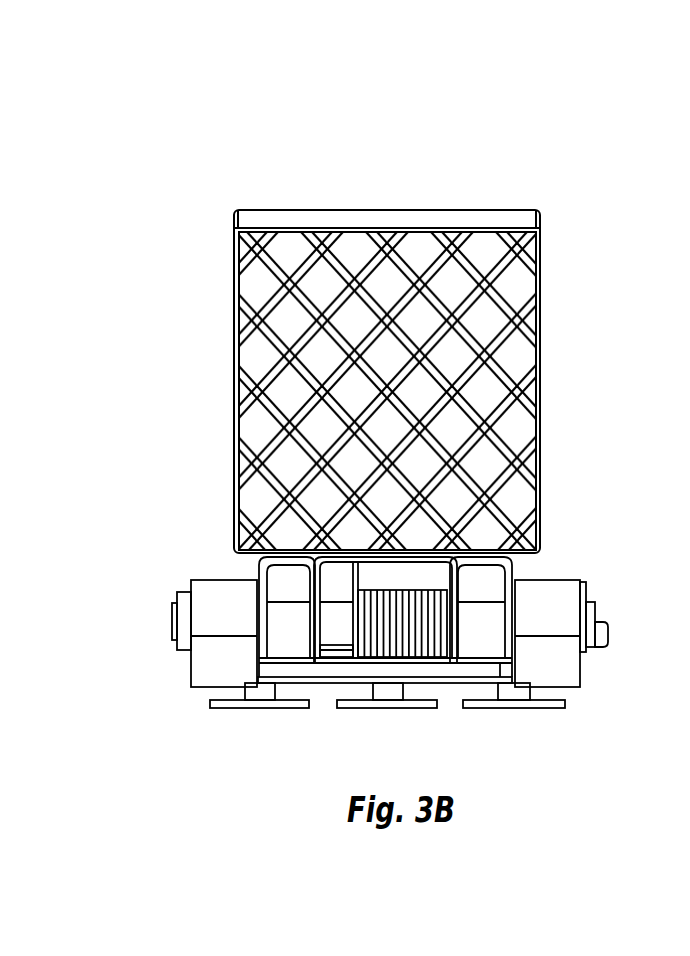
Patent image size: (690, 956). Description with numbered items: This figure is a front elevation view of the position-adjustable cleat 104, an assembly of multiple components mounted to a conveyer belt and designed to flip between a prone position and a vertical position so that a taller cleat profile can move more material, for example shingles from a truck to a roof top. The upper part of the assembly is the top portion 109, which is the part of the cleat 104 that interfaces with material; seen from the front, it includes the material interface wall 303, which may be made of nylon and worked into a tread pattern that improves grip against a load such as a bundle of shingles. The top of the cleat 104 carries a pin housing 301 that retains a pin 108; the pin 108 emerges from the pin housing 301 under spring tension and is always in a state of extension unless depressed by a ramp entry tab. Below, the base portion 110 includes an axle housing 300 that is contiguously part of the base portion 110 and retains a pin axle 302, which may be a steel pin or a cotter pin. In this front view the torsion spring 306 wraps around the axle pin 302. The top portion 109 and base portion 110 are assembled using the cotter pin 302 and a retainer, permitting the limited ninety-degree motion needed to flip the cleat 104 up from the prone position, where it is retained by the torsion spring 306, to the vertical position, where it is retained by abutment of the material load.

The position-adjustable cleat 104 is at (325, 135).
The top portion 109 is at (541, 280).
The material interface wall 303 is at (327, 348).
The torsion spring 306 is at (402, 590).
The pin housing 301 is at (483, 600).
The axle housing 300 is at (221, 578).
The pin axle 302 is at (178, 613).
The pin 108 is at (608, 637).
The base portion 110 is at (205, 702).